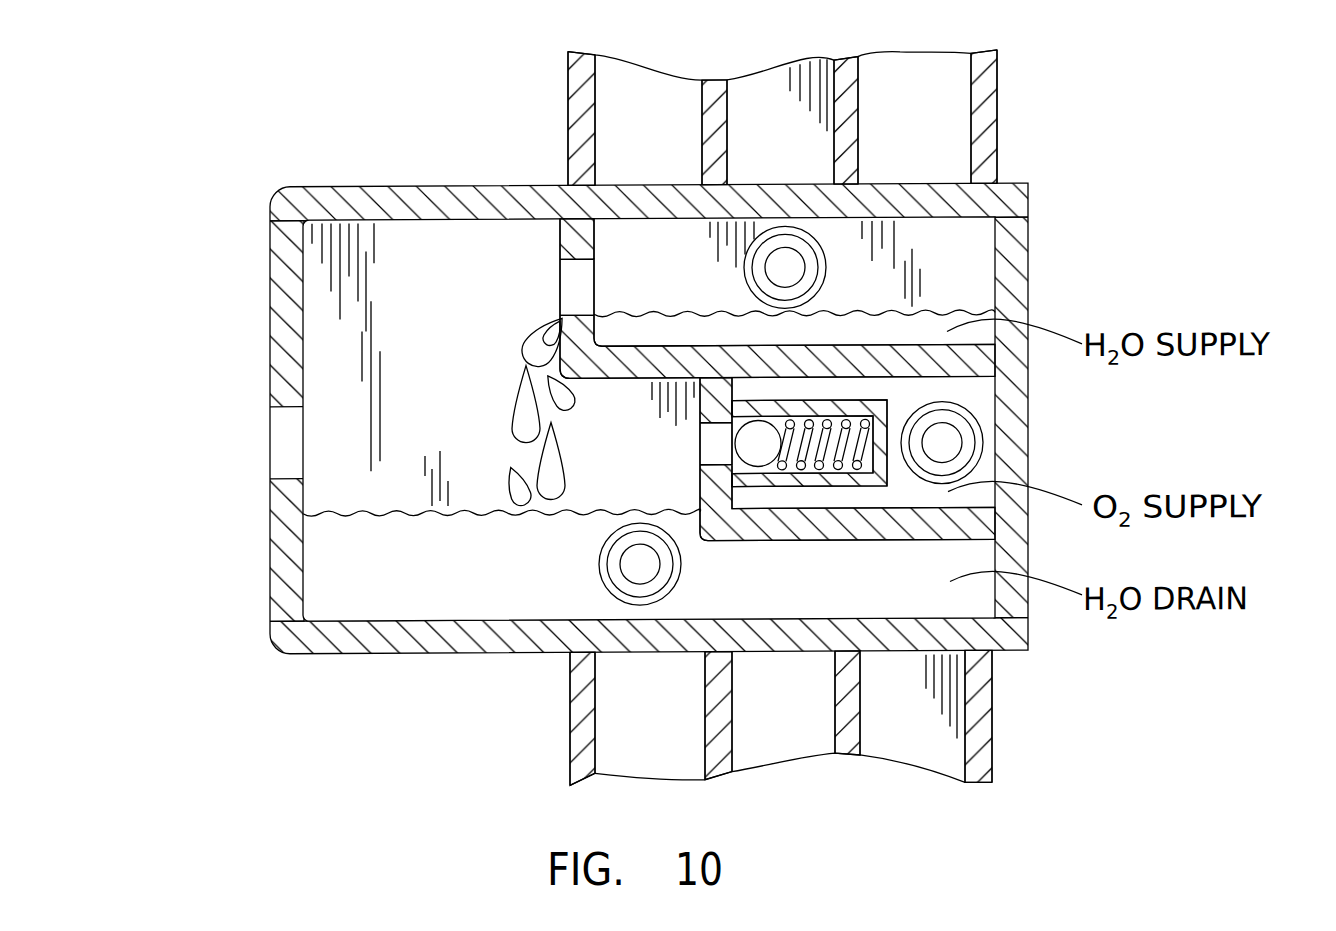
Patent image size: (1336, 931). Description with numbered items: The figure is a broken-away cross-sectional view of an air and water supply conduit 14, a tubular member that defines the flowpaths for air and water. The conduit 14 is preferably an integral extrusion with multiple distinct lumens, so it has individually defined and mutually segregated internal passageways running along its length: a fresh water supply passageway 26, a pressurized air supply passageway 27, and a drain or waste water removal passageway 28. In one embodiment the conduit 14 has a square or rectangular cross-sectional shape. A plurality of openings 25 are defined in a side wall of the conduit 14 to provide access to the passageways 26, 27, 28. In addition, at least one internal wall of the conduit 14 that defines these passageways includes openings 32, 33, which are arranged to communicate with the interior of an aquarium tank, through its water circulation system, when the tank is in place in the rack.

The air and water supply conduit 14 is at (919, 171).
The opening 25 is at (272, 433).
The fresh water supply passageway 26 is at (690, 283).
The pressurized air supply passageway 27 is at (928, 390).
The drain or waste water removal passageway 28 is at (320, 597).
The opening 32 is at (560, 283).
The opening 33 is at (700, 444).